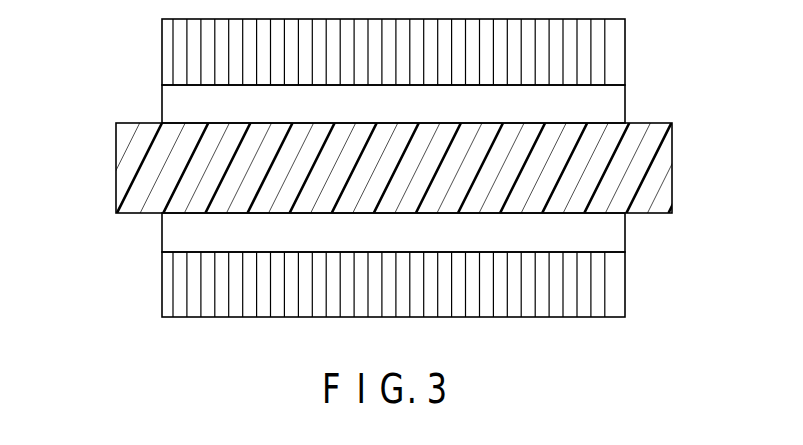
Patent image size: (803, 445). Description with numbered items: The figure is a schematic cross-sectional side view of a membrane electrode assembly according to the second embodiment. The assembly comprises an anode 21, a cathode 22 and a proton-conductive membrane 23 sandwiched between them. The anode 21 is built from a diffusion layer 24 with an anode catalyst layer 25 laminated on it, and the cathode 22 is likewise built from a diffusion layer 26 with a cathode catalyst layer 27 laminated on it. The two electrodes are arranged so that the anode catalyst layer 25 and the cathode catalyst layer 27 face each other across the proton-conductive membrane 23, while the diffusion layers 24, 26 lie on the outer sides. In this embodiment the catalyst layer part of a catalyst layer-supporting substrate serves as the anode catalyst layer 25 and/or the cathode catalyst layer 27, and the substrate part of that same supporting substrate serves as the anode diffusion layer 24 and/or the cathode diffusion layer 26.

The anode 21 is at (132, 17).
The cathode 22 is at (133, 214).
The proton-conductive membrane 23 is at (117, 165).
The diffusion layer 24 is at (605, 56).
The anode catalyst layer 25 is at (605, 105).
The diffusion layer 26 is at (605, 289).
The cathode catalyst layer 27 is at (605, 236).